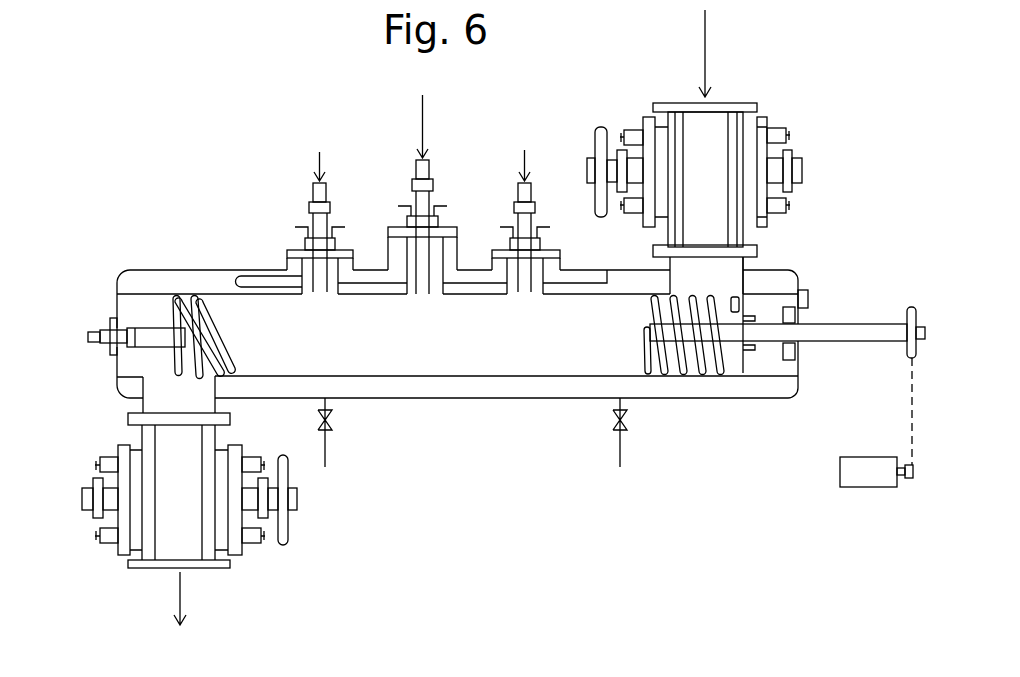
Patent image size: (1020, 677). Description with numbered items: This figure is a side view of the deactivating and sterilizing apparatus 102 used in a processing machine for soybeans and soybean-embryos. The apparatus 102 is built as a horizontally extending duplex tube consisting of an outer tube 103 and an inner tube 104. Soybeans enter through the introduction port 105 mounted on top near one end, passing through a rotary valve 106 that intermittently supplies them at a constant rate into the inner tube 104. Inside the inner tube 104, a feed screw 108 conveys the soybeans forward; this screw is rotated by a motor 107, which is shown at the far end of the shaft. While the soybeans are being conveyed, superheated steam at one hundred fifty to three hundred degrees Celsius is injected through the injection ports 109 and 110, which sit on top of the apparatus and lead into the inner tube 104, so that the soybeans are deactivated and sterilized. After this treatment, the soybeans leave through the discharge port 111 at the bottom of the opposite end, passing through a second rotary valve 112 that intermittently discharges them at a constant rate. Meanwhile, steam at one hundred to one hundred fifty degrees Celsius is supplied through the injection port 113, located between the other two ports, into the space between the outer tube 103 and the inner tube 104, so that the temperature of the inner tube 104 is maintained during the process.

The deactivating and sterilizing apparatus 102 is at (528, 398).
The outer tube 103 is at (144, 270).
The inner tube 104 is at (383, 376).
The introduction port 105 is at (685, 103).
The rotary valve 106 is at (790, 152).
The motor 107 is at (868, 488).
The feed screw 108 is at (715, 376).
The injection port 109 is at (516, 190).
The injection port 110 is at (312, 193).
The discharge port 111 is at (198, 569).
The rotary valve 112 is at (92, 484).
The injection port 113 is at (413, 170).